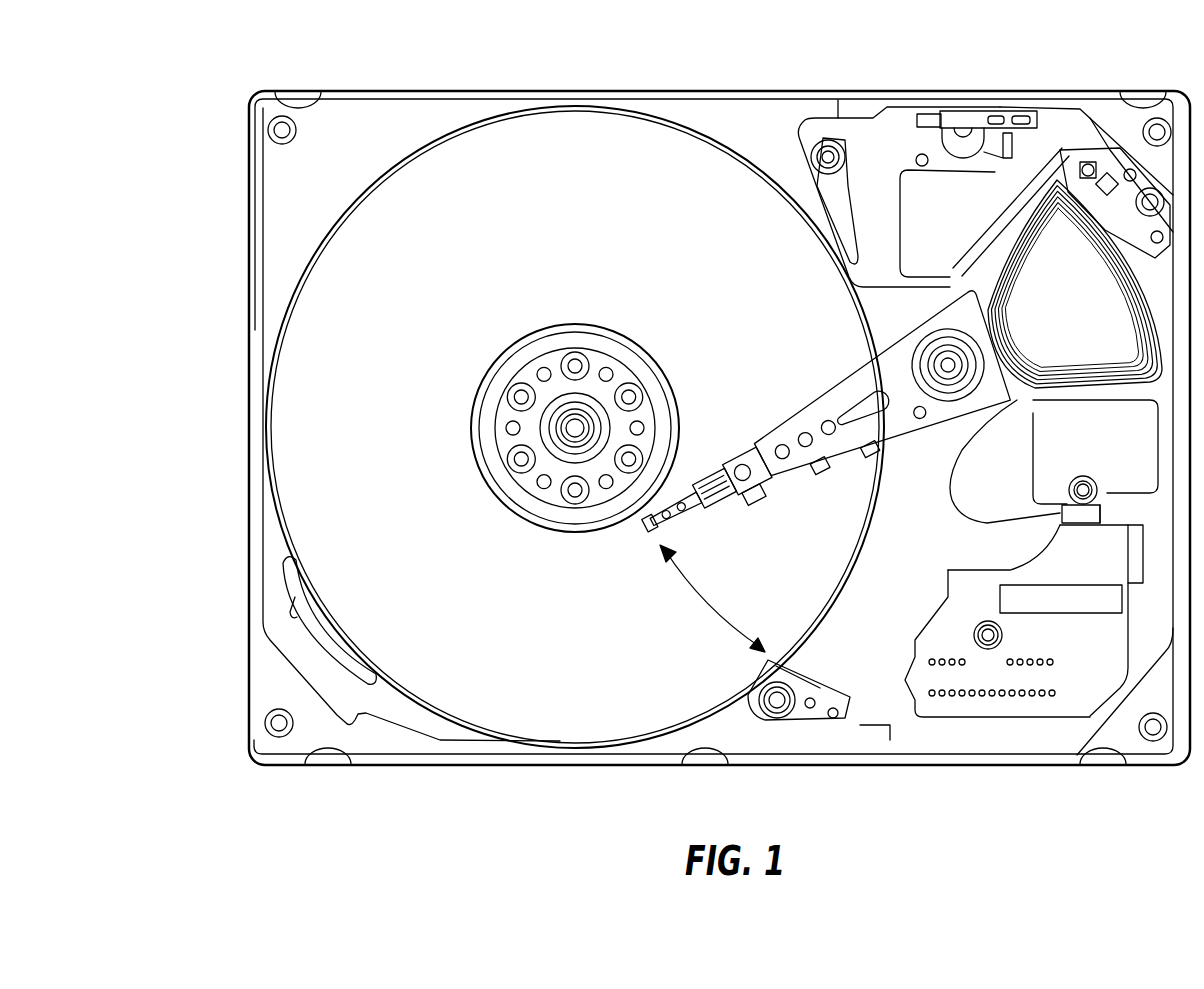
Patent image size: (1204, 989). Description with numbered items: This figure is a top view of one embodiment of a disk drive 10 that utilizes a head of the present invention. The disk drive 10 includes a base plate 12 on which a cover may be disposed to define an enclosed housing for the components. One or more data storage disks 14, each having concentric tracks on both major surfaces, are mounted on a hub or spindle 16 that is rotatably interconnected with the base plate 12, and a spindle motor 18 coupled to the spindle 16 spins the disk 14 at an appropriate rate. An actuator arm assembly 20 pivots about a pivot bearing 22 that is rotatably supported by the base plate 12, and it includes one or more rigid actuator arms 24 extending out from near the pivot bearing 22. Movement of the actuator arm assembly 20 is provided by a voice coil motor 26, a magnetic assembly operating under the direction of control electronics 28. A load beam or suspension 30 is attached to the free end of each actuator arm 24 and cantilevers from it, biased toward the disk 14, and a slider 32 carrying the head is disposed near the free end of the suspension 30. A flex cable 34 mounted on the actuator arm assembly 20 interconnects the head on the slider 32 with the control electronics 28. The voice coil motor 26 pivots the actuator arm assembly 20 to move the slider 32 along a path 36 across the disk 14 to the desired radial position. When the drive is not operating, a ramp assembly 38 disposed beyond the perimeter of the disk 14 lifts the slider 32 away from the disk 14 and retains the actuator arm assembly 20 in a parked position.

The disk drive 10 is at (187, 186).
The base plate 12 is at (457, 90).
The data storage disk 14 is at (590, 140).
The spindle 16 is at (606, 322).
The spindle motor 18 is at (550, 400).
The actuator arm assembly 20 is at (825, 390).
The pivot bearing 22 is at (943, 393).
The actuator arm 24 is at (798, 462).
The voice coil motor 26 is at (1075, 284).
The control electronics 28 is at (995, 703).
The suspension 30 is at (694, 480).
The slider 32 is at (645, 535).
The flex cable 34 is at (960, 516).
The path 36 is at (708, 598).
The ramp assembly 38 is at (810, 706).